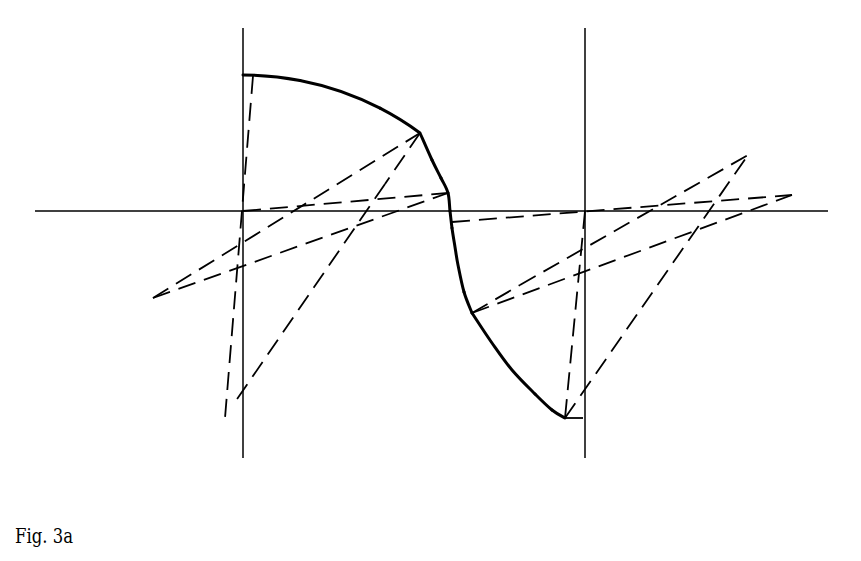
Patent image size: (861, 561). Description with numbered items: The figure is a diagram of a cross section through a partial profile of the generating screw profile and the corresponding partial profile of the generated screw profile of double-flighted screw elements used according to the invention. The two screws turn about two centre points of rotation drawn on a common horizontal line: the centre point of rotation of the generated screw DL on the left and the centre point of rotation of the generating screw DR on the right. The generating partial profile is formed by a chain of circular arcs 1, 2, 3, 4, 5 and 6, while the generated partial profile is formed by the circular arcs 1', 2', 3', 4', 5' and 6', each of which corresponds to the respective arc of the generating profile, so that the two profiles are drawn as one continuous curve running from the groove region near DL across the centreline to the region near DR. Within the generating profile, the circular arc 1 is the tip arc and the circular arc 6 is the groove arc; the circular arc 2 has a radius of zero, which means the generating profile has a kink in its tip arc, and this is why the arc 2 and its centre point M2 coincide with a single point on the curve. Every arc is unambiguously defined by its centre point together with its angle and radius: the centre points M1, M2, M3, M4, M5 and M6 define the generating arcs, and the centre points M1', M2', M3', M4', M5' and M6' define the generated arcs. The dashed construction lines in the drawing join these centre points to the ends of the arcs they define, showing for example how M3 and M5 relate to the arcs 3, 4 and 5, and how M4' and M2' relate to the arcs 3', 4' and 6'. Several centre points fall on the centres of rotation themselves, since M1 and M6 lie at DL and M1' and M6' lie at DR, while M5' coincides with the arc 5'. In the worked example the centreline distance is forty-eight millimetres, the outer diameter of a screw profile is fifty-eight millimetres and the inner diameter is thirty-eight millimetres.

The circular arc 1 is at (462, 198).
The circular arc 2 is at (485, 158).
The circular arc 3 is at (445, 161).
The circular arc 4 is at (409, 134).
The circular arc 5 is at (340, 84).
The circular arc 6 is at (271, 62).
The circular arc 1' is at (437, 223).
The circular arc 2' is at (444, 260).
The circular arc 3' is at (459, 312).
The circular arc 4' is at (503, 354).
The circular arc 5' is at (530, 438).
The circular arc 6' is at (569, 430).
The centre point M1 is at (267, 176).
The centre point M2 is at (358, 211).
The centre point M3 is at (268, 228).
The centre point M4 is at (361, 149).
The centre point M5 is at (290, 315).
The centre point M6 is at (192, 247).
The centre point M1' is at (622, 169).
The centre point M2' is at (654, 243).
The centre point M3' is at (513, 319).
The centre point M4' is at (657, 269).
The centre point M5' is at (557, 450).
The centre point M6' is at (657, 267).
The centre point of rotation of the generated screw DL is at (240, 210).
The centre point of rotation of the generating screw DR is at (590, 207).